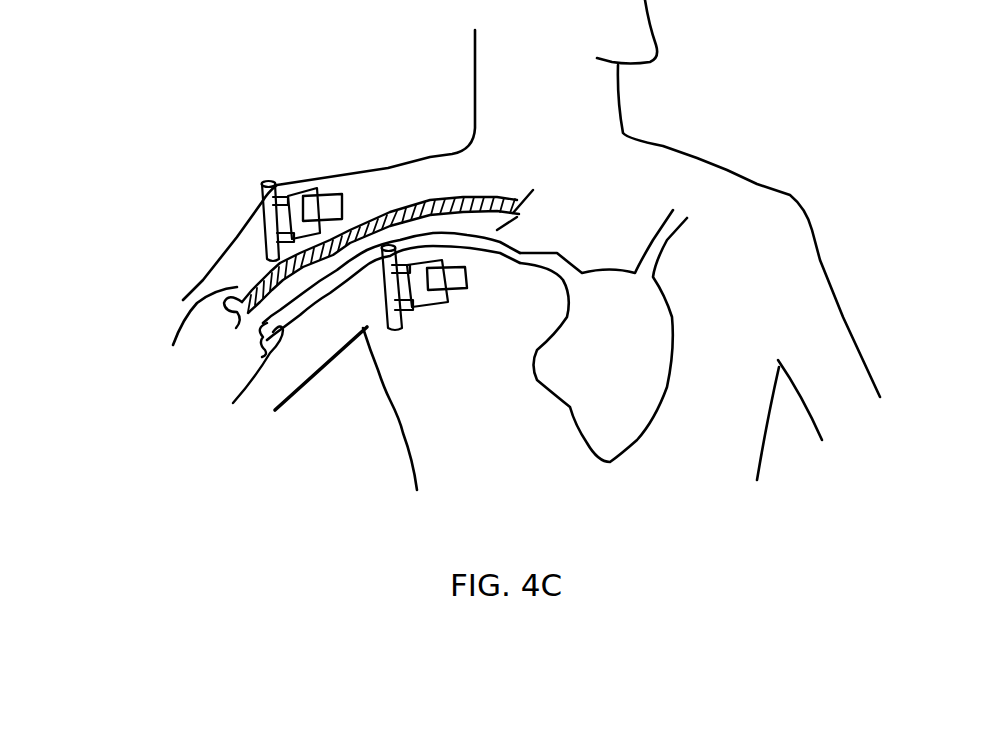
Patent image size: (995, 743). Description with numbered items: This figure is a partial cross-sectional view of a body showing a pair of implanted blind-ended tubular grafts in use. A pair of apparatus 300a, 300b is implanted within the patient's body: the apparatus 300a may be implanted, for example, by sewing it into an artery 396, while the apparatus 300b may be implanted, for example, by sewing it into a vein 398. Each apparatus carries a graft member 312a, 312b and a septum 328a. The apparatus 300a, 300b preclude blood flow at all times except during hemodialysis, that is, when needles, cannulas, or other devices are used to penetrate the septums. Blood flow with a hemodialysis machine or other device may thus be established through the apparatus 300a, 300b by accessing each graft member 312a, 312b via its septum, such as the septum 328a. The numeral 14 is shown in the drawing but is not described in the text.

The implantable medical device 14 is at (350, 200).
The apparatus 300a is at (258, 198).
The apparatus 300b is at (433, 322).
The graft member 312a is at (260, 232).
The graft member 312b is at (383, 320).
The septum 328a is at (272, 182).
The artery 396 is at (197, 336).
The vein 398 is at (240, 382).